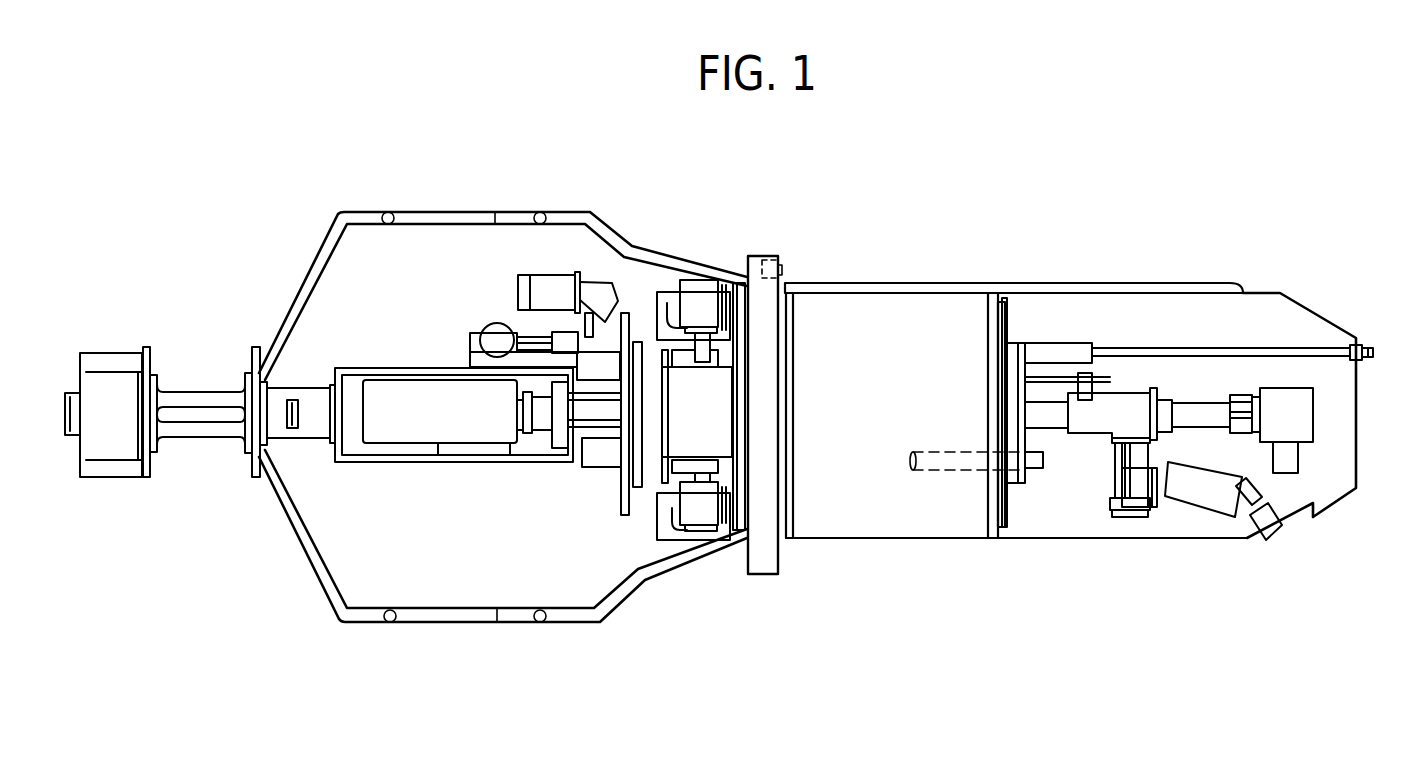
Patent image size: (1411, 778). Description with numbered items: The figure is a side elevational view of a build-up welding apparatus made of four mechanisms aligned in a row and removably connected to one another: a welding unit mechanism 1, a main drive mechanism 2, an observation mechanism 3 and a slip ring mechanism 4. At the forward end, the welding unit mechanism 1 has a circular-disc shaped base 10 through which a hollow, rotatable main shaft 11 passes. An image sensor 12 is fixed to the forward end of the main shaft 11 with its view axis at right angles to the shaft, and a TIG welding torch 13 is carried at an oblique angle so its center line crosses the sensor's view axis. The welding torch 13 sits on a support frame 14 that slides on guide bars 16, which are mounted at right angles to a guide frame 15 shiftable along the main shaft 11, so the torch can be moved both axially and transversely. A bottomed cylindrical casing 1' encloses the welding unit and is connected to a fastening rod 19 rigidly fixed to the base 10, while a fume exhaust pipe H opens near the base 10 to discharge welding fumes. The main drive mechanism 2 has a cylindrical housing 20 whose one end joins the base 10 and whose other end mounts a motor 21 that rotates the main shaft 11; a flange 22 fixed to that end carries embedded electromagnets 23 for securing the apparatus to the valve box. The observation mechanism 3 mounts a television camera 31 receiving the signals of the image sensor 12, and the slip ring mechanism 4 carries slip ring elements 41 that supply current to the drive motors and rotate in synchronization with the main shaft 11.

The welding unit mechanism 1 is at (1122, 596).
The cylindrical casing 1' is at (1299, 394).
The main drive mechanism 2 is at (922, 558).
The observation mechanism 3 is at (483, 626).
The slip ring mechanism 4 is at (263, 574).
The base 10 is at (1023, 468).
The main shaft 11 is at (1053, 425).
The image sensor 12 is at (1307, 437).
The welding torch 13 is at (1268, 538).
The support frame 14 is at (1167, 500).
The guide frame 15 is at (1130, 403).
The guide bars 16 is at (1133, 460).
The fastening rod 19 is at (1210, 348).
The housing 20 is at (860, 540).
The motor 21 is at (697, 522).
The flange 22 is at (768, 256).
The electromagnets 23 is at (778, 262).
The television camera 31 is at (409, 388).
The slip ring elements 41 is at (110, 478).
The fume exhaust pipe H is at (1033, 470).